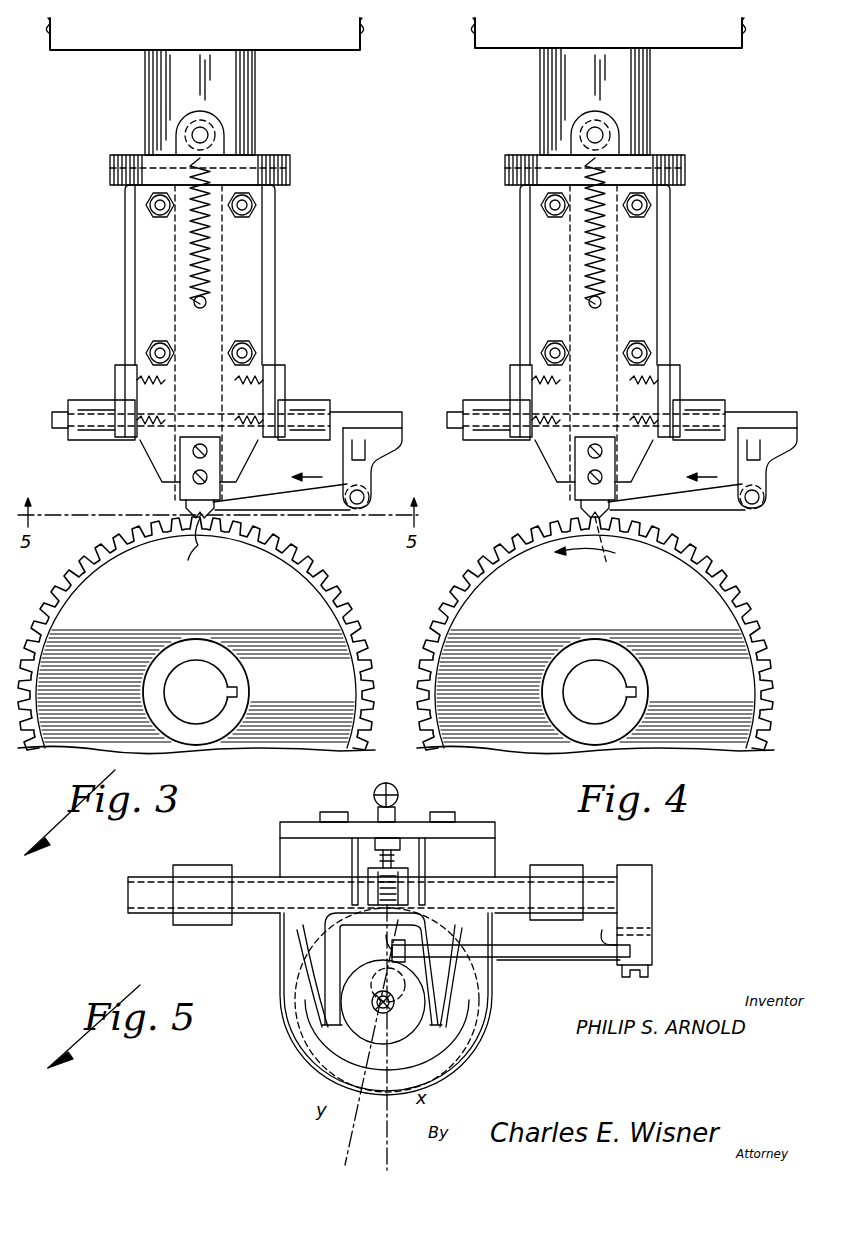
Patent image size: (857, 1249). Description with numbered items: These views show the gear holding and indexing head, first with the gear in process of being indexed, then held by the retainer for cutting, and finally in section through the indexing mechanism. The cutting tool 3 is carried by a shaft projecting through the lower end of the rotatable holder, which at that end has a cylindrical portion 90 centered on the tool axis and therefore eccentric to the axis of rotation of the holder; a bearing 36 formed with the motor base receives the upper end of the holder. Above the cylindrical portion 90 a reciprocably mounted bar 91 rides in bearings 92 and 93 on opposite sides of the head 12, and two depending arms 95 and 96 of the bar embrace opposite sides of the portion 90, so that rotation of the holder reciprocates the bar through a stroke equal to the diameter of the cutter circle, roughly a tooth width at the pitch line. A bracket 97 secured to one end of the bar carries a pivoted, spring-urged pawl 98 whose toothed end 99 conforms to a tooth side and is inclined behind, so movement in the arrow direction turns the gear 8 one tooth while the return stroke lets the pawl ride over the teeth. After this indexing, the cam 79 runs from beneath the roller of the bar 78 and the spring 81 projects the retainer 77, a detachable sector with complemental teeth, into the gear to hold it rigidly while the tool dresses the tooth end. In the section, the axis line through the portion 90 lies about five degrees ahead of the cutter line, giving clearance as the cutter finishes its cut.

In FIG. 5, the cutting tool 3 is at (376, 1010).
In FIG. 3, the gear 8 is at (196, 635).
In FIG. 4, the gear 8 is at (595, 635).
In FIG. 3, the bearings 12 is at (125, 332).
In FIG. 4, the bearings 12 is at (573, 333).
In FIG. 3, the bearing 36 is at (256, 82).
In FIG. 4, the bearing 36 is at (619, 101).
In FIG. 3, the retainer 77 is at (185, 496).
In FIG. 4, the retainer 77 is at (566, 477).
In FIG. 3, the bar 78 is at (222, 320).
In FIG. 4, the bar 78 is at (646, 305).
In FIG. 5, the bar 78 is at (372, 842).
In FIG. 3, the cam 79 is at (292, 166).
In FIG. 4, the cam 79 is at (595, 170).
In FIG. 3, the spring 81 is at (206, 265).
In FIG. 4, the spring 81 is at (619, 233).
In FIG. 5, the spring 81 is at (398, 792).
In FIG. 5, the cylindrical portion 90 is at (412, 1030).
In FIG. 3, the bar 91 is at (52, 428).
In FIG. 4, the bar 91 is at (616, 418).
In FIG. 5, the bar 91 is at (128, 903).
In FIG. 3, the bearing 92 is at (86, 441).
In FIG. 4, the bearing 92 is at (496, 403).
In FIG. 5, the bearing 92 is at (555, 870).
In FIG. 3, the bearing 93 is at (300, 400).
In FIG. 4, the bearing 93 is at (625, 402).
In FIG. 5, the bearing 93 is at (196, 876).
In FIG. 5, the depending arm 95 is at (455, 930).
In FIG. 5, the depending arm 96 is at (305, 946).
In FIG. 3, the bracket 97 is at (343, 462).
In FIG. 4, the bracket 97 is at (746, 468).
In FIG. 5, the bracket 97 is at (653, 882).
In FIG. 3, the pawl 98 is at (322, 502).
In FIG. 4, the pawl 98 is at (689, 510).
In FIG. 5, the pawl 98 is at (548, 955).
In FIG. 3, the toothed end 99 is at (201, 545).
In FIG. 4, the toothed end 99 is at (592, 549).
In FIG. 5, the toothed end 99 is at (386, 935).